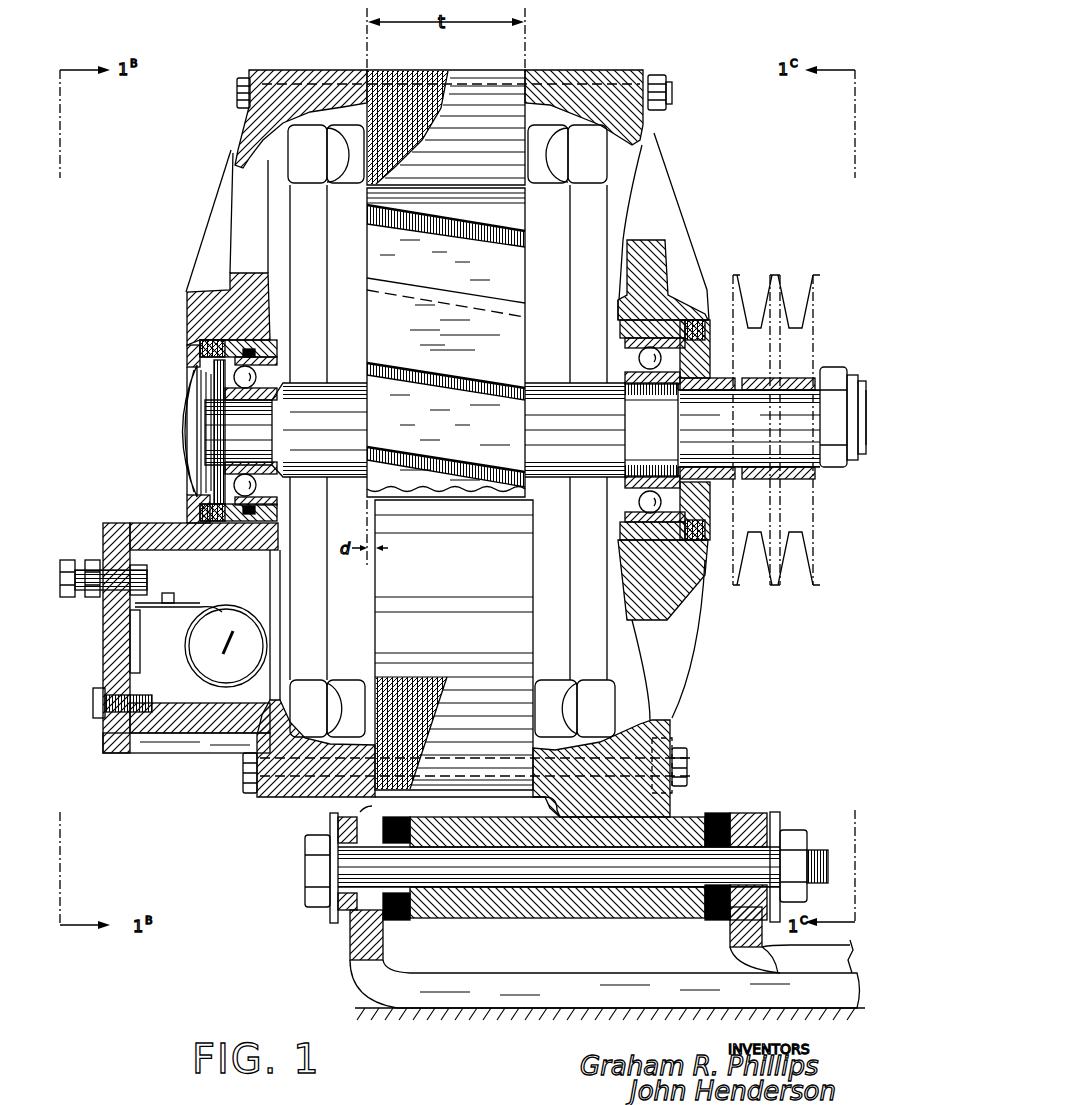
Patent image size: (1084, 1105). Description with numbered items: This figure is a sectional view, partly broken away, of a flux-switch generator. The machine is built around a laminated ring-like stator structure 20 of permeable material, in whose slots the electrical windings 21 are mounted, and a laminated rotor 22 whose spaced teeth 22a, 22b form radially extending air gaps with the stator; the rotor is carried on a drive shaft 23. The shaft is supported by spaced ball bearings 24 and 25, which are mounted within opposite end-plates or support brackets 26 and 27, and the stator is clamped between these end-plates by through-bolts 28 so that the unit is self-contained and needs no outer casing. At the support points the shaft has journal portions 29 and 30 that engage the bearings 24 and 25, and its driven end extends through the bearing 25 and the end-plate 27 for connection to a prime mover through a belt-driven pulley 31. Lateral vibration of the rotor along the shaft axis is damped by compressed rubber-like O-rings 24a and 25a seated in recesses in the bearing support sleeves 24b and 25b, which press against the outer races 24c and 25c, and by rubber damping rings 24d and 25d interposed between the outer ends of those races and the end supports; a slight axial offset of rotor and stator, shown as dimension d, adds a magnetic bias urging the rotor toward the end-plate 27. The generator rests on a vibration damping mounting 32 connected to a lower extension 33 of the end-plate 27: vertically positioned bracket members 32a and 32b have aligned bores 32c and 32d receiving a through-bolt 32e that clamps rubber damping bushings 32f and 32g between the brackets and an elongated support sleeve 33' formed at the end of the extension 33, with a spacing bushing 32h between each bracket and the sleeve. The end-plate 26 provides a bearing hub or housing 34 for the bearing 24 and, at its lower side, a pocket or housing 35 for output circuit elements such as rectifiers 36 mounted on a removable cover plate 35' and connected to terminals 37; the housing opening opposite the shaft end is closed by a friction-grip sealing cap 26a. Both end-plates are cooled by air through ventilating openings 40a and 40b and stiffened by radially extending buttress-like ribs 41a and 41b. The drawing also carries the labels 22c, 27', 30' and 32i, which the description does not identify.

The stator structure 20 is at (416, 66).
The electrical windings 21 is at (333, 118).
The rotor 22 is at (538, 268).
The rotor tooth 22a is at (505, 226).
The rotor tooth 22b is at (380, 312).
The rotor end ring 22c is at (526, 503).
The drive shaft 23 is at (448, 430).
The bearing 24 is at (257, 378).
The O-ring 24a is at (248, 346).
The bearing support sleeve 24b is at (278, 347).
The outer race 24c is at (278, 361).
The damping ring 24d is at (200, 348).
The bearing 25 is at (640, 358).
The O-ring 25a is at (657, 323).
The bearing support sleeve 25b is at (620, 328).
The outer race 25c is at (625, 344).
The damping ring 25d is at (702, 330).
The end-plate 26 is at (246, 152).
The sealing cap 26a is at (178, 436).
The end-plate 27 is at (617, 443).
The end bell hub extension 27' is at (719, 430).
The through-bolts 28 is at (236, 92).
The journal portion 29 is at (238, 432).
The journal portion 30 is at (651, 430).
The shaft extension 30' is at (772, 439).
The pulley 31 is at (748, 277).
The vibration damping mounting 32 is at (342, 963).
The bracket member 32a is at (362, 816).
The bracket member 32b is at (745, 815).
The bore 32c is at (350, 932).
The bore 32d is at (740, 944).
The through-bolt 32e is at (540, 880).
The rubber damping bushing 32f is at (395, 925).
The rubber damping bushing 32g is at (705, 926).
The spacing bushing 32h is at (330, 858).
The base plate 32i is at (440, 1006).
The lower extension 33 is at (559, 814).
The support sleeve 33' is at (557, 917).
The bearing hub 34 is at (190, 312).
The housing 35 is at (181, 649).
The cover plate 35' is at (169, 529).
The rectifiers 36 is at (228, 610).
The terminals 37 is at (88, 600).
The ventilating openings 40a is at (240, 192).
The ventilating openings 40b is at (650, 166).
The ribs 41a is at (205, 224).
The ribs 41b is at (699, 256).